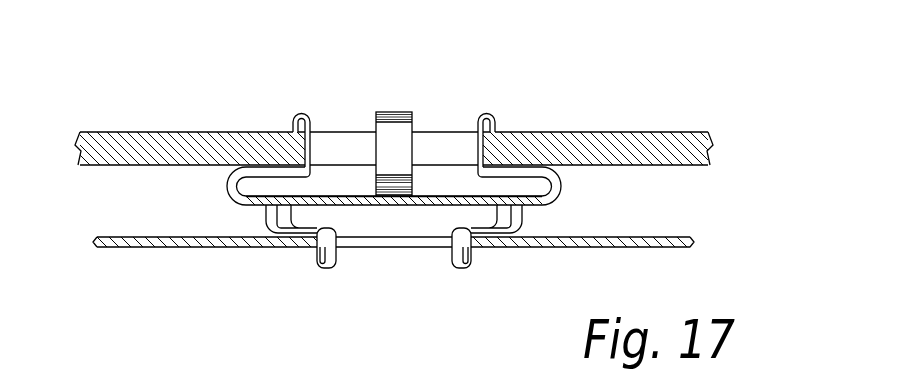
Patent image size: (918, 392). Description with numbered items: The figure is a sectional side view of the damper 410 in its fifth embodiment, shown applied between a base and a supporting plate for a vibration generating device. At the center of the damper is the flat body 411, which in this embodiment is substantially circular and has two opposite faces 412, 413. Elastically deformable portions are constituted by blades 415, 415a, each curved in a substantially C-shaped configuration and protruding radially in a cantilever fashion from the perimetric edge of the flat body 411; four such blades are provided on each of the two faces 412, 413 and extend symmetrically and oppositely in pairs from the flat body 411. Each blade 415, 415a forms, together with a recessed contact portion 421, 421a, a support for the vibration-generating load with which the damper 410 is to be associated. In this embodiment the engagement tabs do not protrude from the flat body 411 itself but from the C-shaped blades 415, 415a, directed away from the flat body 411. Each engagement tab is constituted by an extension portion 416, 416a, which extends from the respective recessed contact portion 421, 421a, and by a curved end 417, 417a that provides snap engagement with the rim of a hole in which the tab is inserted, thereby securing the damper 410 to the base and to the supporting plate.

The damper 410 is at (605, 193).
The flat body 411 is at (354, 186).
The face 412 is at (437, 196).
The face 413 is at (403, 207).
The blade 415 is at (228, 186).
The blade 415a is at (522, 218).
The extension portion 416 is at (312, 135).
The extension portion 416a is at (337, 253).
The curved end 417 is at (300, 112).
The curved end 417a is at (318, 266).
The recessed contact portion 421 is at (260, 157).
The recessed contact portion 421a is at (498, 231).